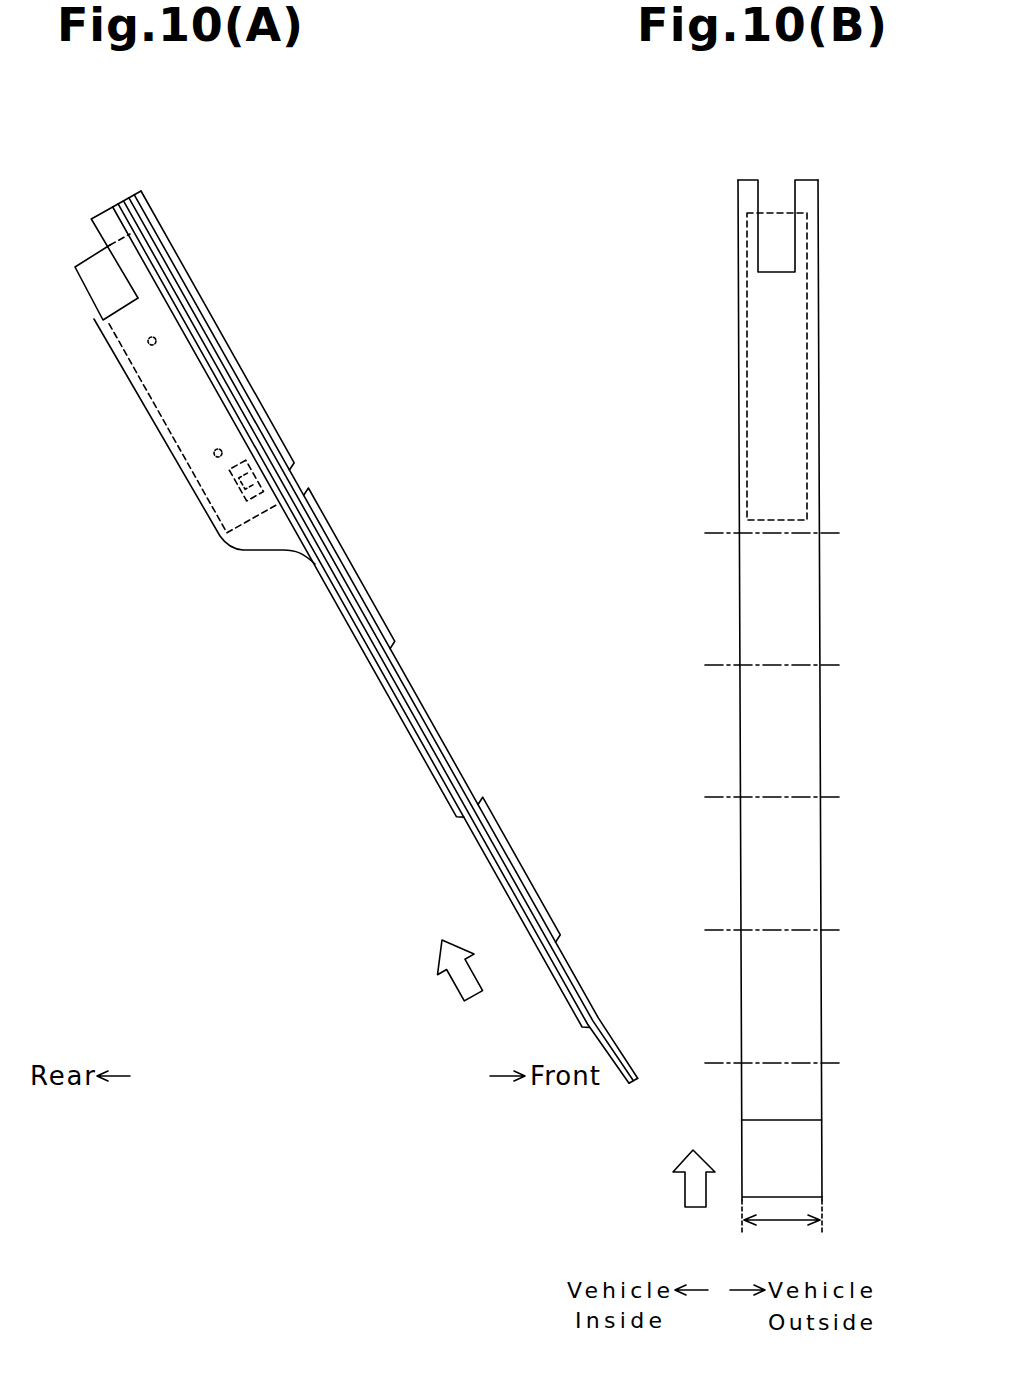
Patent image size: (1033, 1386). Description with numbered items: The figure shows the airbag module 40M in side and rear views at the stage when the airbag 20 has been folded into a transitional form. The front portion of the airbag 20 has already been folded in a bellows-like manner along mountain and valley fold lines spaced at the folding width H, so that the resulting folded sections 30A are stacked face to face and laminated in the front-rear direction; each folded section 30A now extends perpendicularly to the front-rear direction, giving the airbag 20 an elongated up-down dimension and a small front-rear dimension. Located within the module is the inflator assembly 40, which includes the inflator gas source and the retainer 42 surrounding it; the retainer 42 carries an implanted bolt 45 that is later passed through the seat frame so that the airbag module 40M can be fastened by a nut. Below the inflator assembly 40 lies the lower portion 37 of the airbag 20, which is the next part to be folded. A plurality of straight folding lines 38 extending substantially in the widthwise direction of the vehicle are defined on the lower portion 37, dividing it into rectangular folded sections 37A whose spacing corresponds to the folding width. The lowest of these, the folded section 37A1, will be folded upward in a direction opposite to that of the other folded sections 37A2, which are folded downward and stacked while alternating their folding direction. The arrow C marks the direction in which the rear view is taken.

In FIG. 10A, the folded section 30A is at (117, 211).
In FIG. 10A, the airbag 20 is at (150, 203).
In FIG. 10B, the airbag 20 is at (740, 600).
In FIG. 10A, the bolt 45 is at (157, 337).
In FIG. 10A, the airbag module 40M is at (297, 352).
In FIG. 10B, the airbag module 40M is at (567, 391).
In FIG. 10A, the inflator assembly 40 is at (98, 320).
In FIG. 10B, the inflator assembly 40 is at (706, 366).
In FIG. 10A, the retainer 42 is at (95, 305).
In FIG. 10B, the retainer 42 is at (746, 345).
In FIG. 10A, the folding line 38 is at (325, 500).
In FIG. 10B, the folding line 38 is at (717, 533).
In FIG. 10A, the lower portion 37 is at (468, 828).
In FIG. 10B, the lower portion 37 is at (742, 893).
In FIG. 10B, the folded section 37A is at (687, 712).
In FIG. 10B, the lowest folded section 37A1 is at (748, 1185).
In FIG. 10B, the folded section other than the lowest 37A2 is at (746, 633).
In FIG. 10A, the direction C is at (448, 987).
In FIG. 10B, the direction C is at (682, 1180).
In FIG. 10B, the folding width H is at (787, 1221).